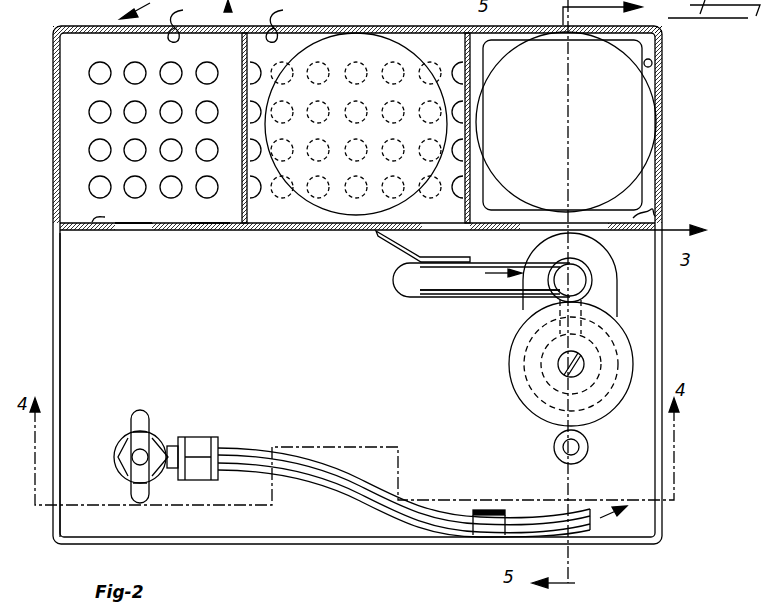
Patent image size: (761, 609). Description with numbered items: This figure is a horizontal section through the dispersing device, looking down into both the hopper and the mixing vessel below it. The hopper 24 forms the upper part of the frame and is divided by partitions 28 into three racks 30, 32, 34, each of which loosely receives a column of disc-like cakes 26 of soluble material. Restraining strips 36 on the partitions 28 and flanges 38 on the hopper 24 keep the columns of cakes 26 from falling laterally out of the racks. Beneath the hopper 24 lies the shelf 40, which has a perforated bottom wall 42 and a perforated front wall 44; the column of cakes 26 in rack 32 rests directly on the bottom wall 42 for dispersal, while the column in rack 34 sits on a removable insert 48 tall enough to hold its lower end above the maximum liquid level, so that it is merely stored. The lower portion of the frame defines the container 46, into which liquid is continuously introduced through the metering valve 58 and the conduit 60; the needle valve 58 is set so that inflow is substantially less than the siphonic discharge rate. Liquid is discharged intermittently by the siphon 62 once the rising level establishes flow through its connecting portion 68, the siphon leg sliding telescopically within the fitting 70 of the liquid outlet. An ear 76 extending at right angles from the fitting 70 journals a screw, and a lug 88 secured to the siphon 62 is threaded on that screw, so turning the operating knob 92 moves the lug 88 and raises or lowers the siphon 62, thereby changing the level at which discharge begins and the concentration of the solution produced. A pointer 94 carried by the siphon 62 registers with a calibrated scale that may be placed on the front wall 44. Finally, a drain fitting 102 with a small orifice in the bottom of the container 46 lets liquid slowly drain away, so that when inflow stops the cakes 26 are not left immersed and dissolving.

The hopper 24 is at (668, 122).
The cakes 26 is at (372, 57).
The partitions 28 is at (242, 47).
The rack 30 is at (186, 22).
The rack 32 is at (285, 22).
The rack 34 is at (652, 63).
The restraining strips 36 is at (272, 232).
The flanges 38 is at (660, 213).
The shelf 40 is at (82, 93).
The perforated bottom wall 42 is at (95, 45).
The perforated front wall 44 is at (150, 232).
The container 46 is at (70, 316).
The removable insert 48 is at (638, 190).
The metering valve 58 is at (124, 450).
The conduit 60 is at (332, 488).
The siphon 62 is at (415, 300).
The connecting portion 68 is at (490, 297).
The fitting 70 is at (592, 282).
The ear 76 is at (598, 257).
The lug 88 is at (528, 370).
The operating knob 92 is at (515, 353).
The pointer 94 is at (393, 250).
The fitting 102 is at (553, 447).